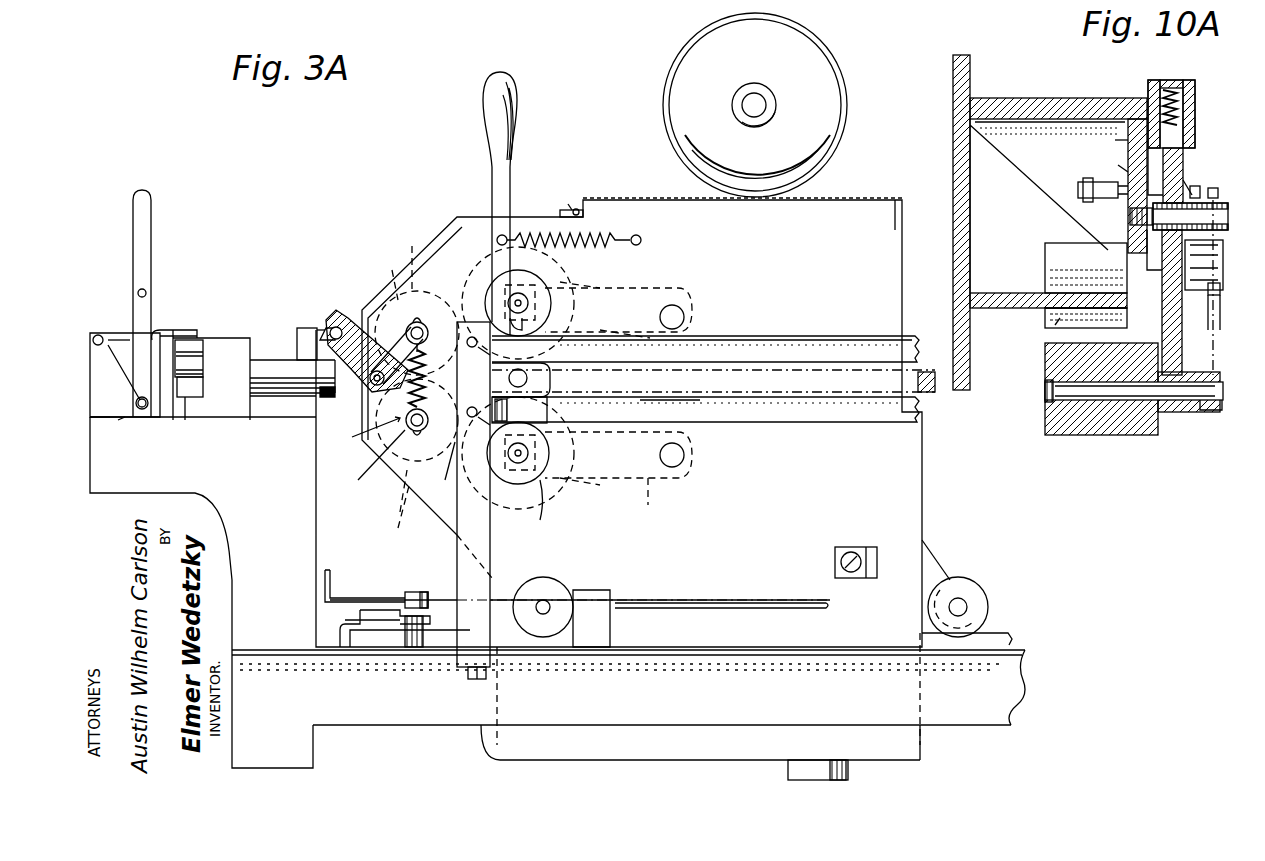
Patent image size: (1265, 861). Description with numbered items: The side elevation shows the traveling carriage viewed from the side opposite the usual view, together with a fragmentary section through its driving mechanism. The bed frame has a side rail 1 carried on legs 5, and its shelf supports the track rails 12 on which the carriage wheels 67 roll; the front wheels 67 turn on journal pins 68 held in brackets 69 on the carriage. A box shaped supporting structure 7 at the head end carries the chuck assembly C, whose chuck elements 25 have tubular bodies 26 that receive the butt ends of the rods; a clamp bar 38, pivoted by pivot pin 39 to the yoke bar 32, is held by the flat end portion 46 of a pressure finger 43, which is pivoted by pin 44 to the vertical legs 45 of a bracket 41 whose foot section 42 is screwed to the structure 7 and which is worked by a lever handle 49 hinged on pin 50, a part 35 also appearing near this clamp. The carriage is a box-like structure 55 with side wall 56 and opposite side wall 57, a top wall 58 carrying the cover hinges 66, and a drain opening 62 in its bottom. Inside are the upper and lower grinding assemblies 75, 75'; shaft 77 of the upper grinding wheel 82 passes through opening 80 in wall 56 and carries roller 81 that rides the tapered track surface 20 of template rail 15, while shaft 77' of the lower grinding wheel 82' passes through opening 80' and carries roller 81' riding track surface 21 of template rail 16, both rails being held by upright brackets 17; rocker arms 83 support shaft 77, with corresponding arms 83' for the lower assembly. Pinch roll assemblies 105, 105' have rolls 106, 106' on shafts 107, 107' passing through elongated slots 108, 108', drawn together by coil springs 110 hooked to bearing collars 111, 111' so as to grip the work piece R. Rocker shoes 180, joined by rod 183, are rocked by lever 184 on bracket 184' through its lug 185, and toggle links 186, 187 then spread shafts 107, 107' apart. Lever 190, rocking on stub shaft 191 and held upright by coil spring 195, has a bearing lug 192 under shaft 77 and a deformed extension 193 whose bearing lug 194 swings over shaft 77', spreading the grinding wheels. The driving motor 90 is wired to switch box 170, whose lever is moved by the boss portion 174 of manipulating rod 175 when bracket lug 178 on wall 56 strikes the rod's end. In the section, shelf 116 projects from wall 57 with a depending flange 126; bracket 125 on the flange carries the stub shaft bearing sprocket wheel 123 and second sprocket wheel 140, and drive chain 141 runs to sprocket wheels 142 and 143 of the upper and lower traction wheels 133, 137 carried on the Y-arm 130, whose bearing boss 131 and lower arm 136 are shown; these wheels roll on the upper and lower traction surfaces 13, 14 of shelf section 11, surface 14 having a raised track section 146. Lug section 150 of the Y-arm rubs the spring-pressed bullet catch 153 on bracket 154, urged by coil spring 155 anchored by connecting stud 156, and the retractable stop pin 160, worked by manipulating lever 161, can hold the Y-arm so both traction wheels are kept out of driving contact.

In FIG. 3A, the side rail 1 is at (1028, 655).
In FIG. 3A, the rail 12 is at (1012, 638).
In FIG. 3A, the leg 5 is at (305, 756).
In FIG. 3A, the box shaped supporting structure 7 is at (203, 498).
In FIG. 3A, the lower traction wheel 137 is at (482, 740).
In FIG. 10A, the lower traction wheel 137 is at (1082, 437).
In FIG. 3A, the drain opening 62 is at (848, 770).
In FIG. 3A, the side wall 56 is at (619, 423).
In FIG. 3A, the box-like structure 55 is at (868, 190).
In FIG. 3A, the top wall 58 is at (604, 198).
In FIG. 3A, the hinge 66 is at (570, 206).
In FIG. 3A, the driving motor 90 is at (755, 105).
In FIG. 3A, the coil spring 195 is at (610, 236).
In FIG. 3A, the manually manipulated lever 190 is at (512, 108).
In FIG. 3A, the upright bracket 17 is at (458, 553).
In FIG. 3A, the opening 80 is at (518, 297).
In FIG. 3A, the roller 81 is at (536, 294).
In FIG. 3A, the upper grinding assembly 75 is at (509, 301).
In FIG. 3A, the stub shaft 191 is at (528, 380).
In FIG. 3A, the bearing lug 194 is at (502, 434).
In FIG. 3A, the opening 80' is at (518, 482).
In FIG. 3A, the roller 81' is at (552, 512).
In FIG. 3A, the lower grinding assembly 75' is at (538, 469).
In FIG. 3A, the bearing lug 192 is at (618, 310).
In FIG. 3A, the shaft 77 is at (690, 307).
In FIG. 3A, the grinding wheel 82 is at (583, 274).
In FIG. 3A, the rocker arm 83 is at (628, 301).
In FIG. 3A, the deformed extension 193 is at (565, 428).
In FIG. 3A, the shaft 77' is at (691, 463).
In FIG. 3A, the grinding wheel 82' is at (592, 489).
In FIG. 3A, the lower link edge 83' is at (660, 501).
In FIG. 3A, the template rail 15 is at (826, 342).
In FIG. 3A, the tapered track surface 20 is at (770, 336).
In FIG. 3A, the template rail 16 is at (834, 425).
In FIG. 3A, the track surface 21 is at (764, 426).
In FIG. 3A, the lever handle 49 is at (152, 242).
In FIG. 3A, the vertical leg 45 is at (125, 375).
In FIG. 3A, the pivot pin 44 is at (98, 333).
In FIG. 3A, the pressure finger 43 is at (126, 336).
In FIG. 3A, the foot section 42 is at (97, 418).
In FIG. 3A, the bracket 41 is at (123, 425).
In FIG. 3A, the hinge pin 50 is at (143, 410).
In FIG. 3A, the flat end portion 46 is at (192, 330).
In FIG. 3A, the yoke bar 32 is at (228, 340).
In FIG. 3A, the pivot pin 39 is at (175, 356).
In FIG. 3A, the clamp bar 38 is at (176, 385).
In FIG. 3A, the block bottom 35 is at (184, 422).
In FIG. 3A, the chuck assembly C is at (256, 340).
In FIG. 3A, the chuck element 25 is at (283, 355).
In FIG. 3A, the tubular body 26 is at (270, 398).
In FIG. 3A, the lug 185 is at (315, 380).
In FIG. 3A, the bracket 184' is at (291, 332).
In FIG. 3A, the manually manipulated lever 184 is at (305, 305).
In FIG. 3A, the transversely extending rod 183 is at (332, 326).
In FIG. 3A, the rocker shoe 180 is at (345, 320).
In FIG. 3A, the toggle link 186 is at (402, 318).
In FIG. 3A, the pinch roll 106 is at (415, 258).
In FIG. 3A, the elongated slot 108 is at (393, 276).
In FIG. 3A, the pinch roll assembly 105 is at (429, 331).
In FIG. 3A, the shaft 107 is at (430, 315).
In FIG. 3A, the bearing collar 111 is at (409, 375).
In FIG. 3A, the coil spring 110 is at (363, 432).
In FIG. 3A, the pinch roll assembly 105' is at (392, 423).
In FIG. 3A, the bearing collar 111' is at (369, 460).
In FIG. 3A, the shaft 107' is at (394, 456).
In FIG. 3A, the elongated slot 108' is at (396, 496).
In FIG. 3A, the pinch roll 106' is at (389, 511).
In FIG. 3A, the toggle link 187 is at (448, 469).
In FIG. 3A, the work piece R is at (353, 400).
In FIG. 3A, the boss portion 174 is at (420, 586).
In FIG. 3A, the switch box 170 is at (340, 632).
In FIG. 3A, the wheel 67 is at (550, 585).
In FIG. 3A, the journal pin 68 is at (968, 606).
In FIG. 3A, the bracket 69 is at (936, 562).
In FIG. 3A, the manipulating rod 175 is at (716, 602).
In FIG. 3A, the bracket lug 178 is at (870, 547).
In FIG. 10A, the side wall 57 is at (971, 74).
In FIG. 10A, the shelf 116 is at (1050, 100).
In FIG. 10A, the flange 126 is at (1115, 140).
In FIG. 10A, the retractable stop pin 160 is at (1118, 166).
In FIG. 10A, the manipulating lever 161 is at (1078, 190).
In FIG. 10A, the connecting stud 156 is at (1178, 82).
In FIG. 10A, the coil spring 155 is at (1196, 95).
In FIG. 10A, the bracket 154 is at (1196, 113).
In FIG. 10A, the bullet catch 153 is at (1186, 158).
In FIG. 10A, the lug section 150 is at (1190, 182).
In FIG. 10A, the sprocket wheel 123 is at (1201, 192).
In FIG. 10A, the second sprocket wheel 140 is at (1218, 198).
In FIG. 10A, the bracket 125 is at (1142, 222).
In FIG. 10A, the bearing boss 131 is at (1223, 258).
In FIG. 10A, the sprocket wheel 143 is at (1220, 290).
In FIG. 10A, the drive chain 141 is at (1221, 318).
In FIG. 10A, the Y-arm 130 is at (1220, 351).
In FIG. 10A, the lower arm 136 is at (1163, 321).
In FIG. 10A, the upper traction wheel 133 is at (1045, 252).
In FIG. 10A, the upper traction surface 13 is at (1025, 293).
In FIG. 10A, the shelf section 11 is at (1118, 304).
In FIG. 10A, the lower traction surface 14 is at (1045, 322).
In FIG. 10A, the raised track section 146 is at (1055, 326).
In FIG. 10A, the sprocket wheel 142 is at (1218, 414).